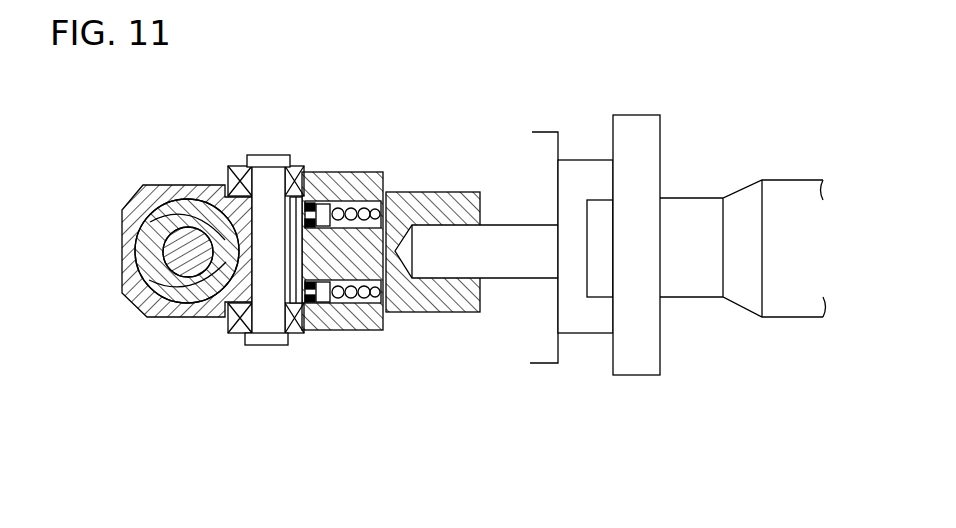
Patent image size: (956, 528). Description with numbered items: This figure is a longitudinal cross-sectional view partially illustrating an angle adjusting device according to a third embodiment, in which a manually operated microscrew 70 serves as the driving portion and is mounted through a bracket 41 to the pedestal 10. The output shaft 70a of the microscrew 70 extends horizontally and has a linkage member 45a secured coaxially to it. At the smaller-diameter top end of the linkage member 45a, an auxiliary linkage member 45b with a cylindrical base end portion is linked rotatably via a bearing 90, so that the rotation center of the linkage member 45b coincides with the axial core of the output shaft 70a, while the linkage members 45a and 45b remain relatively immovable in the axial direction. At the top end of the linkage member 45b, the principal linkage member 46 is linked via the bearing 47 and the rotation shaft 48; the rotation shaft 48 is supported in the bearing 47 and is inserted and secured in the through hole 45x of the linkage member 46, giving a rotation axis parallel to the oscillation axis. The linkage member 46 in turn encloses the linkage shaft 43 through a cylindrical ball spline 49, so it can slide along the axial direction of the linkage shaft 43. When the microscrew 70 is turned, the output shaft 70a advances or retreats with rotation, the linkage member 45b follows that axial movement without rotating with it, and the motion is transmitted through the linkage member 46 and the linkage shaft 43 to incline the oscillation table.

The pedestal 10 is at (561, 135).
The bracket 41 is at (593, 328).
The linkage shaft 43 is at (168, 240).
The linkage member 45a is at (427, 192).
The auxiliary linkage member 45b is at (332, 172).
The through hole 45x is at (266, 335).
The principal linkage member 46 is at (192, 185).
The bearing 47 is at (297, 167).
The rotation shaft 48 is at (268, 180).
The cylindrical ball spline 49 is at (138, 277).
The microscrew 70 is at (750, 176).
The output shaft 70a is at (507, 236).
The bearing 90 is at (378, 173).